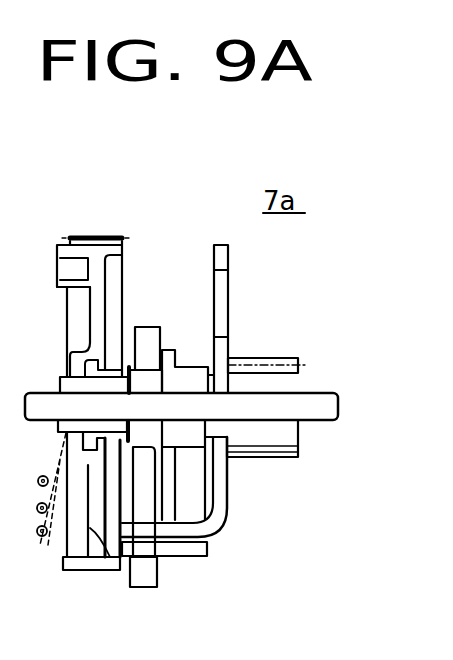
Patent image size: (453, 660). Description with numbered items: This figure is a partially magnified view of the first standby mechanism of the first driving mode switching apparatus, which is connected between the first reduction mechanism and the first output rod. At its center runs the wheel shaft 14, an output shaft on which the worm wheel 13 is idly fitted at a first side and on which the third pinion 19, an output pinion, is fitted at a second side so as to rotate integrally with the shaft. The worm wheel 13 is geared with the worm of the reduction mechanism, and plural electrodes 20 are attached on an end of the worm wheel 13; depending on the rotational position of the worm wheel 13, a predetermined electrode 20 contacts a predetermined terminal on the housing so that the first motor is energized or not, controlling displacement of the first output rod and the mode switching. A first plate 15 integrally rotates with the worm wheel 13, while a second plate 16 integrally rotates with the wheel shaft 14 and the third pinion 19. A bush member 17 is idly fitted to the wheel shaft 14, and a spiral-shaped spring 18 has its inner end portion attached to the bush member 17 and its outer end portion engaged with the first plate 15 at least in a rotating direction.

The worm wheel 13 is at (78, 237).
The wheel shaft 14 is at (335, 393).
The first plate 15 is at (207, 556).
The second plate 16 is at (227, 505).
The bush member 17 is at (170, 347).
The spiral-shaped spring 18 is at (146, 327).
The third pinion 19 is at (268, 358).
The electrodes 20 is at (47, 553).